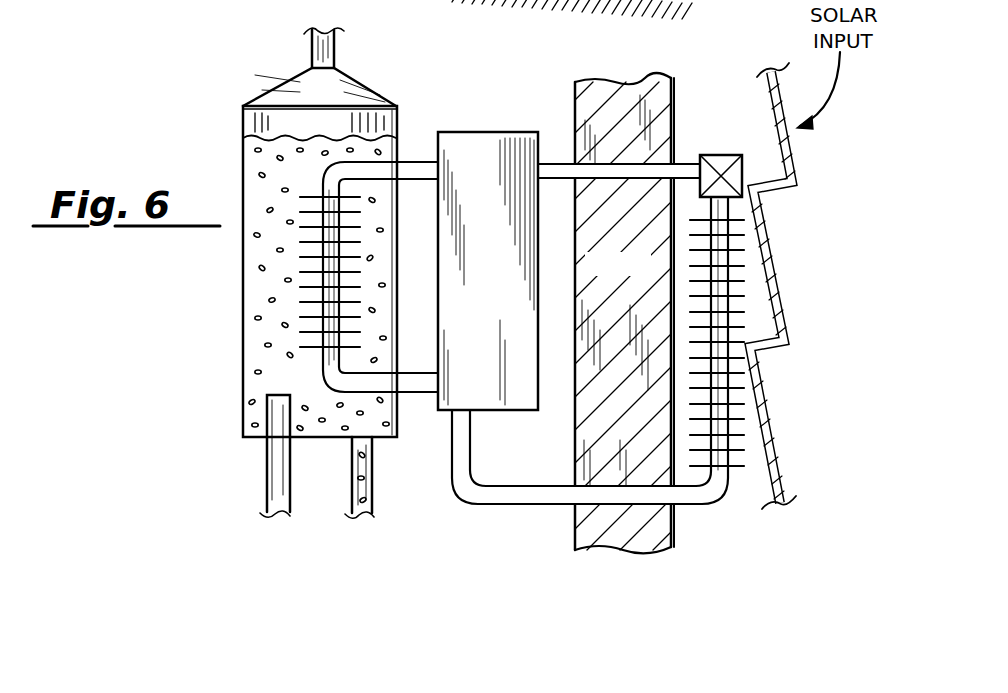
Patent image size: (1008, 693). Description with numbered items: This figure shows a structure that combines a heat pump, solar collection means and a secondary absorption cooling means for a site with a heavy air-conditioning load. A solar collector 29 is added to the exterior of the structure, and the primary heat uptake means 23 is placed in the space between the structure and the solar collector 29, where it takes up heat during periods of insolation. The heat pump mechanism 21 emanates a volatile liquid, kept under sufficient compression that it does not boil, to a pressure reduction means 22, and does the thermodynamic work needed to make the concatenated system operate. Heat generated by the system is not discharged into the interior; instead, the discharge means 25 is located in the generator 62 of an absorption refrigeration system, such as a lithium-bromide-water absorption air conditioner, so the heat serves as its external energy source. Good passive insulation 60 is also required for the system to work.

The generator 62 is at (282, 86).
The discharge means 25 is at (312, 320).
The heat pump mechanism 21 is at (500, 140).
The passive insulation 60 is at (624, 313).
The pressure reduction means 22 is at (719, 155).
The primary heat uptake means 23 is at (737, 418).
The solar collector 29 is at (783, 297).